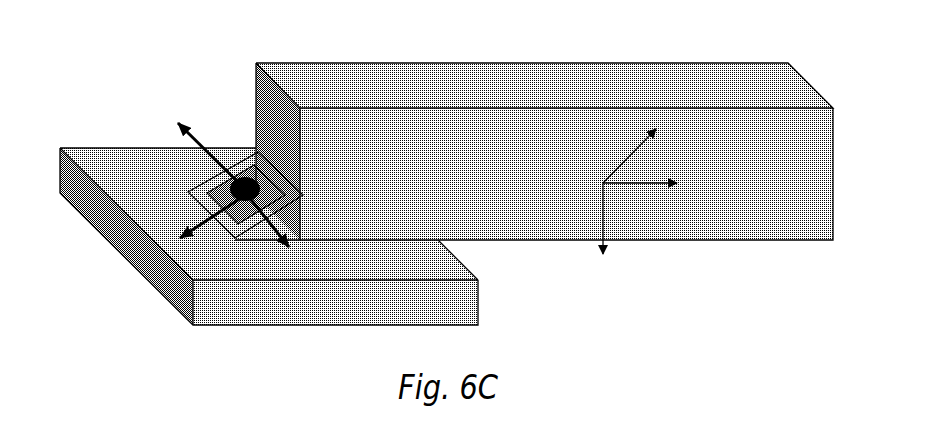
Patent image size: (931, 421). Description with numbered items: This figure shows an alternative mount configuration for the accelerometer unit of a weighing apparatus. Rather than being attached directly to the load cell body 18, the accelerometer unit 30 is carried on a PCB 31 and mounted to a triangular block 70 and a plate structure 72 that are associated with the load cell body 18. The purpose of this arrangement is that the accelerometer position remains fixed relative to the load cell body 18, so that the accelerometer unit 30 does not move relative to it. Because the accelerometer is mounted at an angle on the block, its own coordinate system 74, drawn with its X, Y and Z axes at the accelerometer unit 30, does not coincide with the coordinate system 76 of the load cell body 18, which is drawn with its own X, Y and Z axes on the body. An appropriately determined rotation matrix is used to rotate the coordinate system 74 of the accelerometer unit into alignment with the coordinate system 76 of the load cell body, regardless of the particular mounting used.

The load cell body 18 is at (566, 90).
The accelerometer unit 30 is at (240, 182).
The PCB 31 is at (240, 194).
The triangular block 70 is at (293, 220).
The plate structure 72 is at (275, 312).
The coordinate system of the accelerometer unit 74 is at (215, 138).
The coordinate system of the load cell body 76 is at (720, 148).